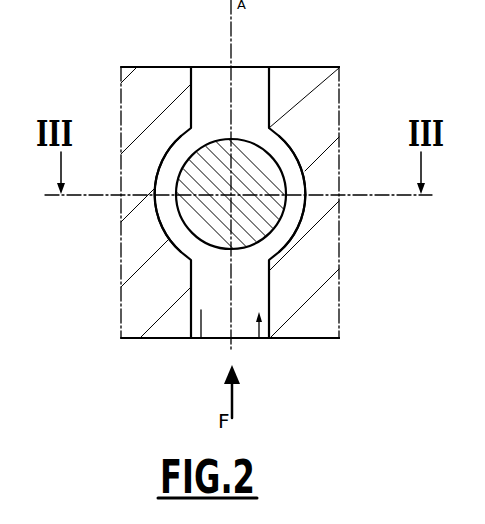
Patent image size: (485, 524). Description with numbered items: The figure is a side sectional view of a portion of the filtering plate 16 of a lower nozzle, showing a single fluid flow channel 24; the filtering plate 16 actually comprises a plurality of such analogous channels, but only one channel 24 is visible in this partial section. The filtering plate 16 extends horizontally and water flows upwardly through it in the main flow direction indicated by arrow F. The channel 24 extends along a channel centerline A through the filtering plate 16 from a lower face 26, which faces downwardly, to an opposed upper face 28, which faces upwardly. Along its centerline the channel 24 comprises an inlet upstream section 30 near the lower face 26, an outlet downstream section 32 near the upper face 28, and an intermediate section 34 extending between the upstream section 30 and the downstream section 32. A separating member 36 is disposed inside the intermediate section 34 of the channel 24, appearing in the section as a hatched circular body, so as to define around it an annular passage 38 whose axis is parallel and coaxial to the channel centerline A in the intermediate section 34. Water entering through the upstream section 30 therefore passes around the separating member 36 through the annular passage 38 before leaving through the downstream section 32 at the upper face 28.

The filtering plate 16 is at (143, 85).
The fluid flow channel 24 is at (262, 340).
The lower face 26 is at (320, 339).
The upper face 28 is at (304, 66).
The inlet upstream section 30 is at (200, 338).
The outlet downstream section 32 is at (207, 79).
The intermediate section 34 is at (172, 153).
The separating member 36 is at (267, 222).
The annular passage 38 is at (287, 157).